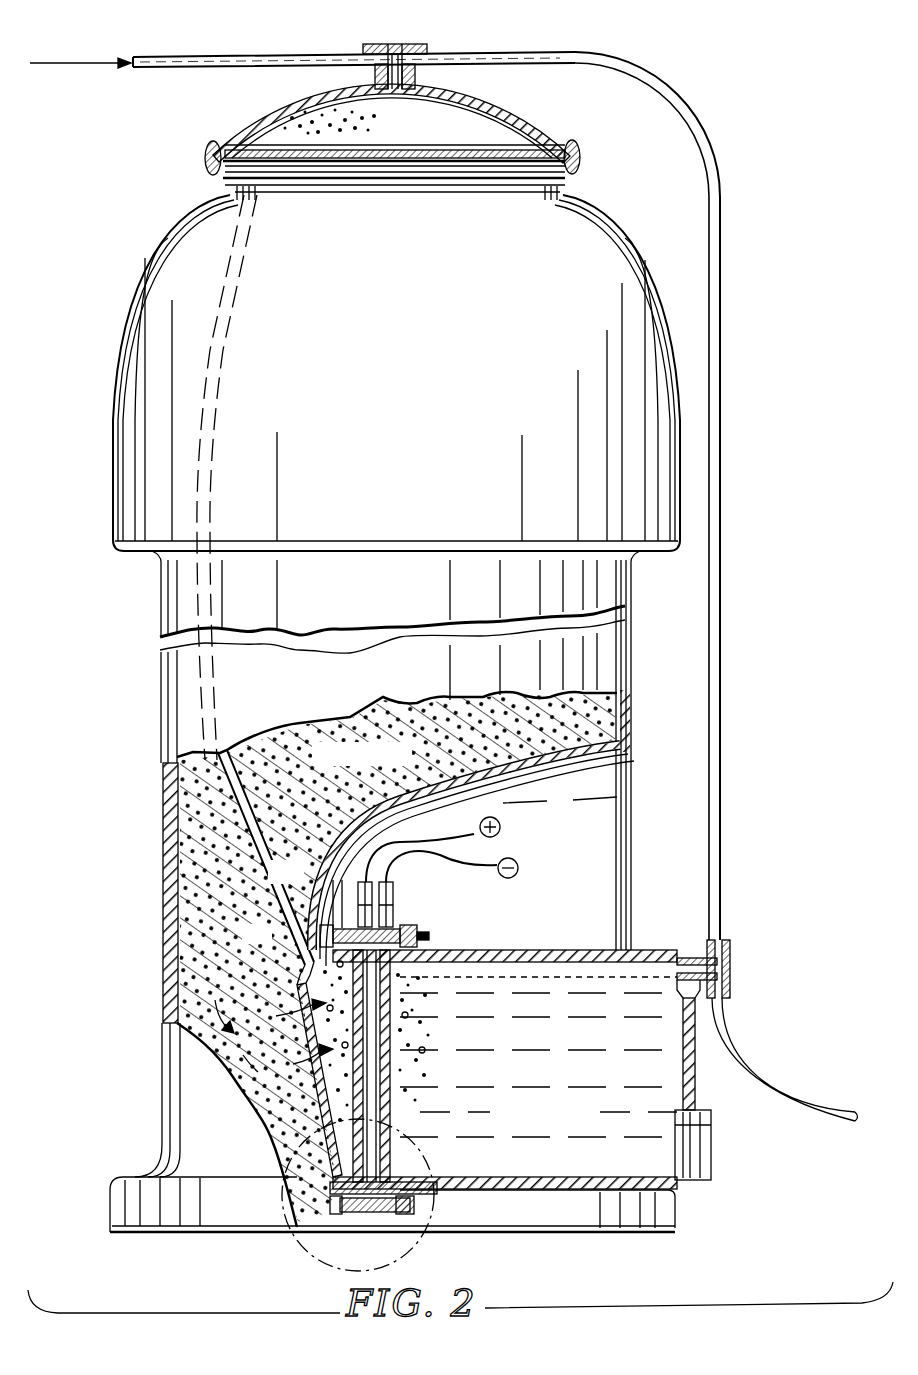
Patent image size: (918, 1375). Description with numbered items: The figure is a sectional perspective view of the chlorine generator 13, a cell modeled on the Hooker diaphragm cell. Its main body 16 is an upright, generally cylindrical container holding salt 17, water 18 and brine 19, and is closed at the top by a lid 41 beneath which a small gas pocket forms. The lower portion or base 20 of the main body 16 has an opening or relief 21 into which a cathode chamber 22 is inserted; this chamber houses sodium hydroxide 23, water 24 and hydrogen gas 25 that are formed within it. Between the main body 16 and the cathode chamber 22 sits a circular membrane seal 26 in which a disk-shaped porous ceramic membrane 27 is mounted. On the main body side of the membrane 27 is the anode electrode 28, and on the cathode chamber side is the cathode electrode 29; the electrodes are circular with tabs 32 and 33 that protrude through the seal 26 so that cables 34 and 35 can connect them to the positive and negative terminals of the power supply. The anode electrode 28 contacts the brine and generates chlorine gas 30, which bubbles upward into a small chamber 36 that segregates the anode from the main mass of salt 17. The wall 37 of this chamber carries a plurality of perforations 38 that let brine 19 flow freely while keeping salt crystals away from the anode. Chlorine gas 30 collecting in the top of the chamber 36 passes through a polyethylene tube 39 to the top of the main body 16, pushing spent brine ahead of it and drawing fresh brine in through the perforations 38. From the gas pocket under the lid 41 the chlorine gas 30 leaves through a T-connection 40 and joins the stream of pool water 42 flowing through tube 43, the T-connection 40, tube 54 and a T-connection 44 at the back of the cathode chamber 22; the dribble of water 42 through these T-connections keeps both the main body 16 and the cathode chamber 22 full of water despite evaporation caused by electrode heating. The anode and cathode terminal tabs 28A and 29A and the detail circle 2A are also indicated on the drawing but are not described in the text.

The chlorine generator 13 is at (100, 188).
The main body 16 is at (170, 906).
The salt 17 is at (397, 957).
The water 18 is at (397, 957).
The brine 19 is at (397, 957).
The base 20 is at (126, 1232).
The relief 21 is at (473, 828).
The cathode chamber 22 is at (660, 950).
The sodium hydroxide 23 is at (538, 1057).
The water 24 is at (538, 1057).
The hydrogen gas 25 is at (538, 1057).
The membrane seal 26 is at (425, 952).
The porous ceramic membrane 27 is at (378, 1114).
The anode electrode 28 is at (352, 1145).
The electrode terminal 28A is at (358, 895).
The cathode electrode 29 is at (388, 1128).
The electrode terminal 29A is at (394, 912).
The chlorine gas 30 is at (302, 112).
The tab 32 is at (318, 934).
The tab 33 is at (400, 930).
The cable 34 is at (440, 842).
The cable 35 is at (468, 862).
The small chamber 36 is at (318, 1110).
The wall 37 is at (316, 1110).
The perforations 38 is at (288, 1039).
The tube 39 is at (283, 902).
The T-connection 40 is at (410, 44).
The lid 41 is at (540, 128).
The water 42 is at (72, 64).
The tube 43 is at (240, 42).
The T-connection 44 is at (731, 970).
The tube 54 is at (530, 53).
The detail circle 2A is at (297, 1244).